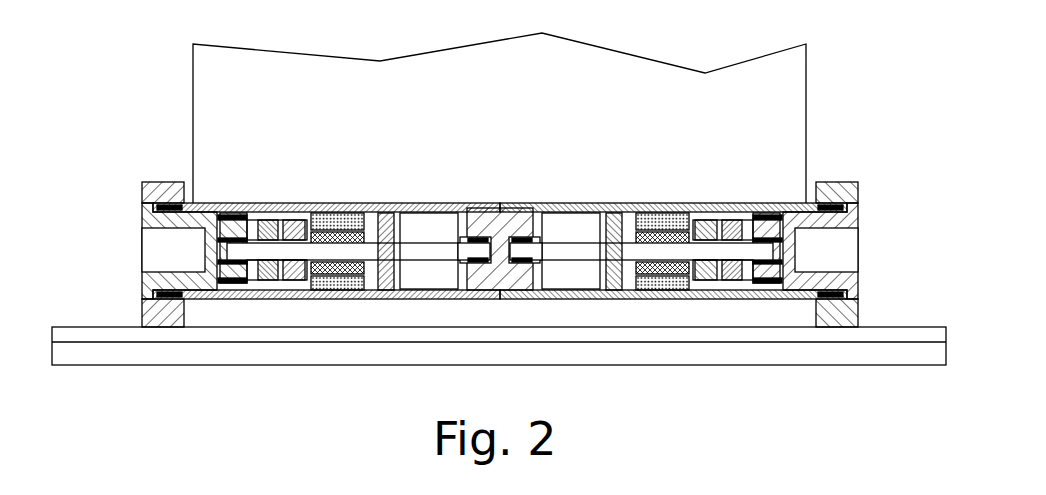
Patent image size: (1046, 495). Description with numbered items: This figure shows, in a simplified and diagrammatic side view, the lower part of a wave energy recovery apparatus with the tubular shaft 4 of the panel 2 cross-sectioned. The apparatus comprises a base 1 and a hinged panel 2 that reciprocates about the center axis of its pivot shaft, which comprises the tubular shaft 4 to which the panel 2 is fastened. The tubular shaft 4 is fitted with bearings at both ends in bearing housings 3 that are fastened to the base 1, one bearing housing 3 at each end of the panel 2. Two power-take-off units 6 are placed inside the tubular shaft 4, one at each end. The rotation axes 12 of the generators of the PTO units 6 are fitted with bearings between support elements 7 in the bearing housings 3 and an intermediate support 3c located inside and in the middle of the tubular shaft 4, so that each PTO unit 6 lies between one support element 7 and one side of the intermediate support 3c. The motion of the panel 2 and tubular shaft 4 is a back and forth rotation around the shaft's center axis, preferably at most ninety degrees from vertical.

The base 1 is at (903, 327).
The hinged panel 2 is at (682, 77).
The bearing housing 3 is at (150, 192).
The intermediate support 3c is at (490, 210).
The tubular shaft 4 is at (547, 203).
The power-take-off unit 6 is at (294, 188).
The support element 7 is at (147, 283).
The rotation axis 12 is at (372, 253).